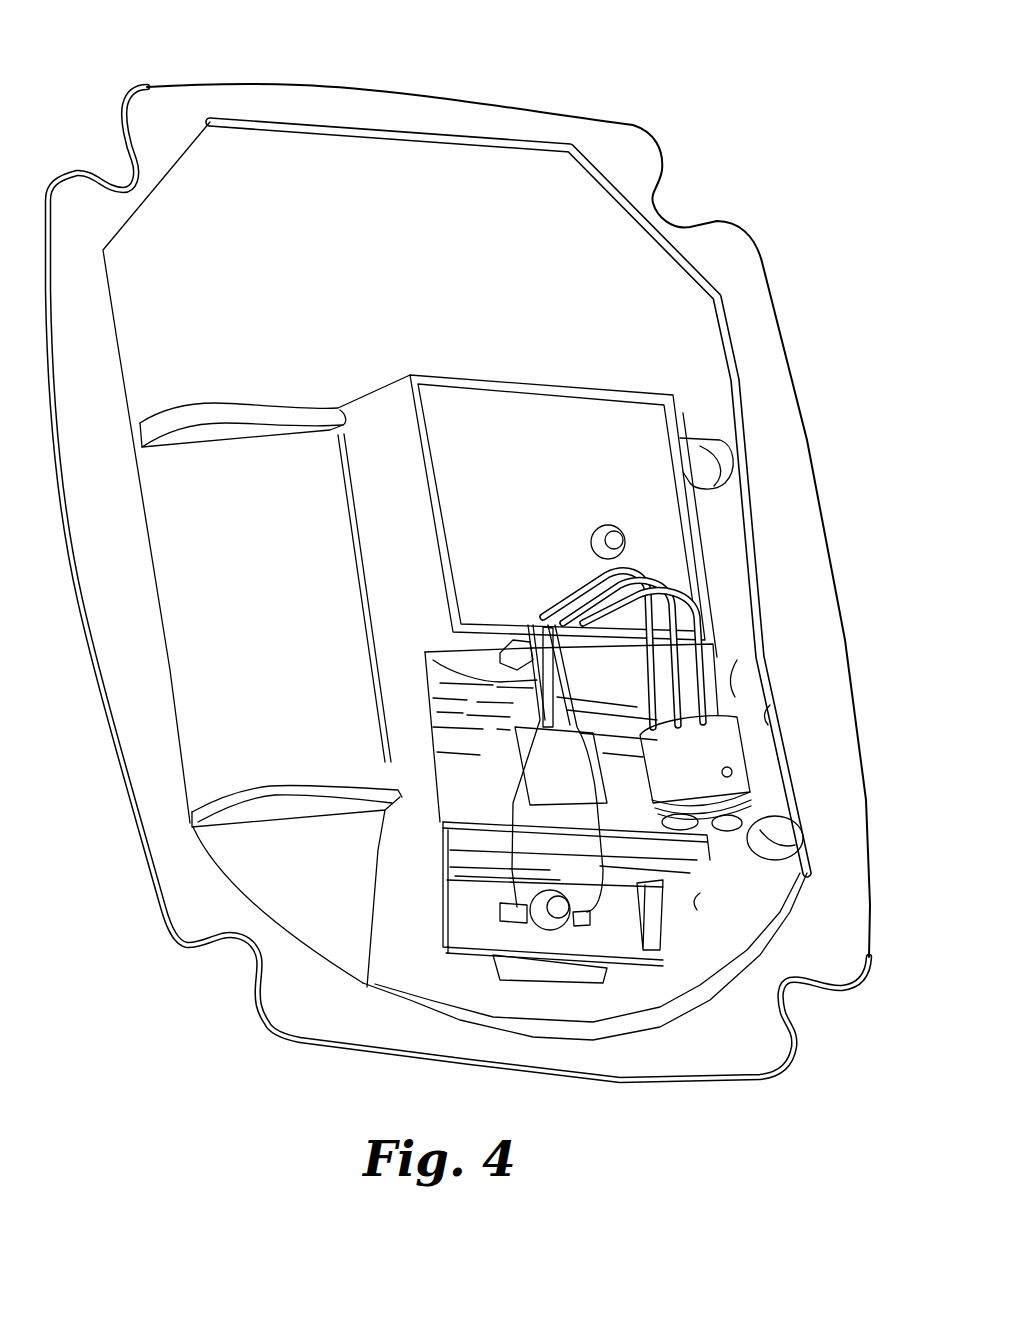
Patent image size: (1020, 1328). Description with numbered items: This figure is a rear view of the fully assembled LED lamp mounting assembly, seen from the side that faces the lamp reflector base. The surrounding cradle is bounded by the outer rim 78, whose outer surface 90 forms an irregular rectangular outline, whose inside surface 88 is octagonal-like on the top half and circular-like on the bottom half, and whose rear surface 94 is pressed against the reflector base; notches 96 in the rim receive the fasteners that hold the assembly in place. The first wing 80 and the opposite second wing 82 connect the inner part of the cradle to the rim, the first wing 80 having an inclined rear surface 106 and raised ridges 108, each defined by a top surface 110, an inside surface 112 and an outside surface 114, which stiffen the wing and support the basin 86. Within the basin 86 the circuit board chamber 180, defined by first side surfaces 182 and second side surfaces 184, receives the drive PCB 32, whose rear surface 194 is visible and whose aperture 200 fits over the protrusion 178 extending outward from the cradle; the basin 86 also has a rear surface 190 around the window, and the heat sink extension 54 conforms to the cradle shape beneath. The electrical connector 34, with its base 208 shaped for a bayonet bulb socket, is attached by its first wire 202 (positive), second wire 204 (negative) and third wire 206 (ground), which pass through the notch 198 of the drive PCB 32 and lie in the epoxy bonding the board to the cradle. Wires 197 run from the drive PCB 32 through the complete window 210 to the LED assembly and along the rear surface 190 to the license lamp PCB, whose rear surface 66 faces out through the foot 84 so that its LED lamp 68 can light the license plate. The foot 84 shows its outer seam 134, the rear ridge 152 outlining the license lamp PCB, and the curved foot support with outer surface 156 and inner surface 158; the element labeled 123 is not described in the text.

The drive PCB 32 is at (593, 437).
The electrical connector 34 is at (720, 730).
The extension 54 is at (590, 915).
The rear surface 66 is at (470, 940).
The LED lamp 68 is at (557, 913).
The outer rim 78 is at (293, 108).
The first wing 80 is at (767, 720).
The second wing 82 is at (247, 607).
The foot 84 is at (400, 873).
The basin 86 is at (367, 397).
The inside surface 88 is at (360, 140).
The outer surface 90 is at (250, 84).
The rear surface 94 is at (440, 120).
The notches 96 is at (853, 1030).
The rear surface 106 is at (733, 670).
The raised ridges 108 is at (687, 383).
The top surface 110 is at (787, 817).
The inside surface 112 is at (710, 480).
The outside surface 114 is at (763, 843).
The reservoir body 123 is at (570, 660).
The outer seam 134 is at (660, 990).
The rear ridge 152 is at (627, 1047).
The outer surface 156 is at (487, 1000).
The inner surface 158 is at (697, 897).
The protrusion 178 is at (623, 526).
The circuit board chamber 180 is at (433, 370).
The first side surfaces 182 is at (334, 510).
The second side surfaces 184 is at (527, 358).
The rear surface 190 is at (440, 760).
The rear surface 194 is at (483, 447).
The wires 197 is at (363, 650).
The notch 198 is at (527, 630).
The aperture 200 is at (590, 531).
The first wire 202 is at (697, 630).
The second wire 204 is at (690, 623).
The third wire 206 is at (647, 593).
The base 208 is at (733, 747).
The complete window 210 is at (547, 763).